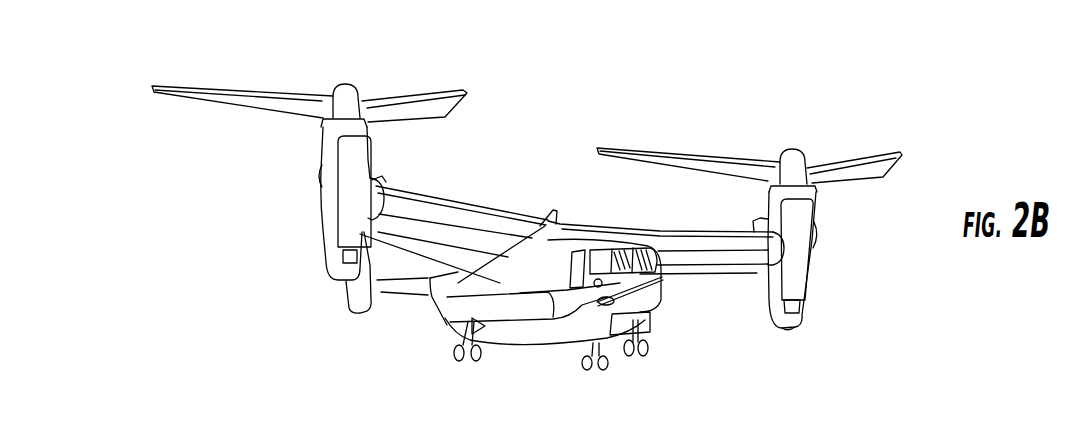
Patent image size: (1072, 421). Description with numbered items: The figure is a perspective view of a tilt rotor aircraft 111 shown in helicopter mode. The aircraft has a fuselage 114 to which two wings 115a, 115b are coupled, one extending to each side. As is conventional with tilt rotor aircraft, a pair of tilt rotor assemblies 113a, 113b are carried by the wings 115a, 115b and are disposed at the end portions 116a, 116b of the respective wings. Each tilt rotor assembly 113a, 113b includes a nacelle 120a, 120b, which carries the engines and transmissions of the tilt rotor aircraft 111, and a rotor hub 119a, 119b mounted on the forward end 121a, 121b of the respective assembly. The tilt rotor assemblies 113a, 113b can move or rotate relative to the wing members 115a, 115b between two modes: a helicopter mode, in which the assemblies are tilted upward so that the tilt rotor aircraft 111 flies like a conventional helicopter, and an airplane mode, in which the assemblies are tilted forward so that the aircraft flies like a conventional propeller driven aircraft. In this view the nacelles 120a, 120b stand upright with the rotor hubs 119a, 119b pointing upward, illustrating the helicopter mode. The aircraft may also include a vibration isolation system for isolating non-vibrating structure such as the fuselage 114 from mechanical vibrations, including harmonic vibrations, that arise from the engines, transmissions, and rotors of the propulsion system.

The tilt rotor aircraft 111 is at (418, 328).
The tilt rotor assembly 113a is at (820, 260).
The tilt rotor assembly 113b is at (312, 217).
The fuselage 114 is at (547, 347).
The wing 115a is at (687, 232).
The wing 115b is at (450, 202).
The end portion of wing 116a is at (758, 287).
The end portion of wing 116b is at (387, 175).
The rotor hub 119a is at (810, 152).
The rotor hub 119b is at (337, 90).
The nacelle 120a is at (803, 315).
The nacelle 120b is at (330, 270).
The forward end of tilt rotor assembly 121a is at (812, 194).
The forward end of tilt rotor assembly 121b is at (322, 130).